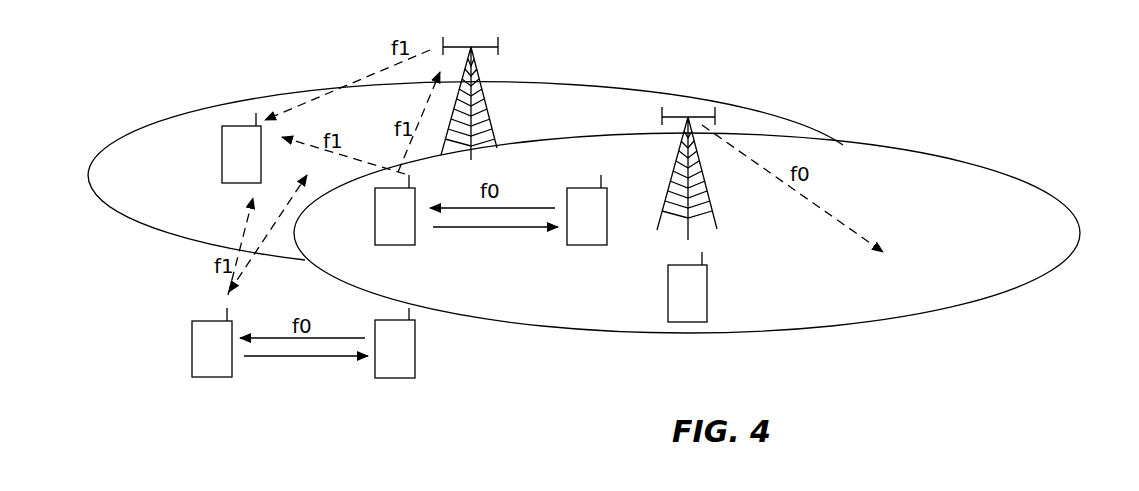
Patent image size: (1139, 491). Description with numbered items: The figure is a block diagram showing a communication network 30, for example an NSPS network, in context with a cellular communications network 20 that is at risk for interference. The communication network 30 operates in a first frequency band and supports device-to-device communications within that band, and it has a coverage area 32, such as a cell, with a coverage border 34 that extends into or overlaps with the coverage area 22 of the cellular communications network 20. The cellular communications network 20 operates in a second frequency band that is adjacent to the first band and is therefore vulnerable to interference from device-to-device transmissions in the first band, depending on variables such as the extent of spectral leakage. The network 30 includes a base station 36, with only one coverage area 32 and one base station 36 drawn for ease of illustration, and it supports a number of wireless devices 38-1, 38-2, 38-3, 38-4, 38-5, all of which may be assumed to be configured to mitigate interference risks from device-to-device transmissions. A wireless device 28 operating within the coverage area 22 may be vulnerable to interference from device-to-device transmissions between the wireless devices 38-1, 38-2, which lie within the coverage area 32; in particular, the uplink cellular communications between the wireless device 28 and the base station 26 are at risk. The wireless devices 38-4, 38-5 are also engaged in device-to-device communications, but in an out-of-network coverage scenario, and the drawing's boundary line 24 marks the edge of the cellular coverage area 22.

The cellular communications network 20 is at (447, 146).
The coverage area 22 is at (113, 168).
The first coverage area boundary 24 is at (98, 207).
The base station 26 is at (478, 86).
The wireless device 28 is at (242, 183).
The communication network 30 is at (711, 224).
The coverage area 32 is at (1035, 225).
The coverage border 34 is at (1080, 232).
The base station 36 is at (708, 193).
The wireless device 38-1 is at (587, 245).
The wireless device 38-2 is at (393, 245).
The wireless device 38-3 is at (688, 322).
The wireless device 38-4 is at (395, 378).
The wireless device 38-5 is at (212, 377).